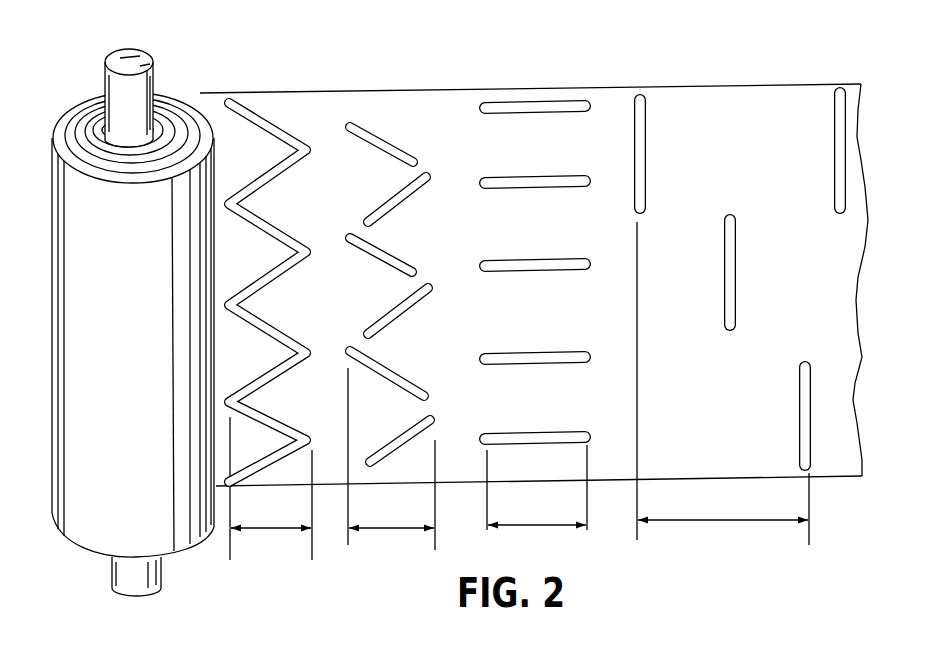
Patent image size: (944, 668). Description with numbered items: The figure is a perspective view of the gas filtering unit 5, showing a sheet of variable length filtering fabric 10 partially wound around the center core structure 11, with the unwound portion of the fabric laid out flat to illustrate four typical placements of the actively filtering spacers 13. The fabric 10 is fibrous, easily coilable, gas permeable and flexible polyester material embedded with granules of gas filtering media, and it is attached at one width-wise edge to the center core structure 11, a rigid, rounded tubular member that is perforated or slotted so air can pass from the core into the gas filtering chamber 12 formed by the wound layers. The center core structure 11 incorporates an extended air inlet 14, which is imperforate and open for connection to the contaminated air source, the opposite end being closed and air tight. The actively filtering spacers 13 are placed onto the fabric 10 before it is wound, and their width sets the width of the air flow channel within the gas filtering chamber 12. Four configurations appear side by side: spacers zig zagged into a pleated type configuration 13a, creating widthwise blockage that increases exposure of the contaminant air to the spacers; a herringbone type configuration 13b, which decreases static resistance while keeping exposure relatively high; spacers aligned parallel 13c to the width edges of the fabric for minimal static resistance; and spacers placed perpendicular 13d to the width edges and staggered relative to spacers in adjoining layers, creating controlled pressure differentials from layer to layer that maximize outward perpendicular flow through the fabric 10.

The gas filtering unit 5 is at (158, 33).
The filtering fabric 10 is at (105, 498).
The center core structure 11 is at (138, 97).
The gas filtering chamber 12 is at (58, 117).
The actively filtering spacers 13 is at (534, 301).
The pleated type configuration 13a is at (270, 331).
The herringbone type configuration 13b is at (391, 338).
The parallel configuration 13c is at (536, 318).
The perpendicular configuration 13d is at (738, 319).
The extended air inlet 14 is at (126, 52).